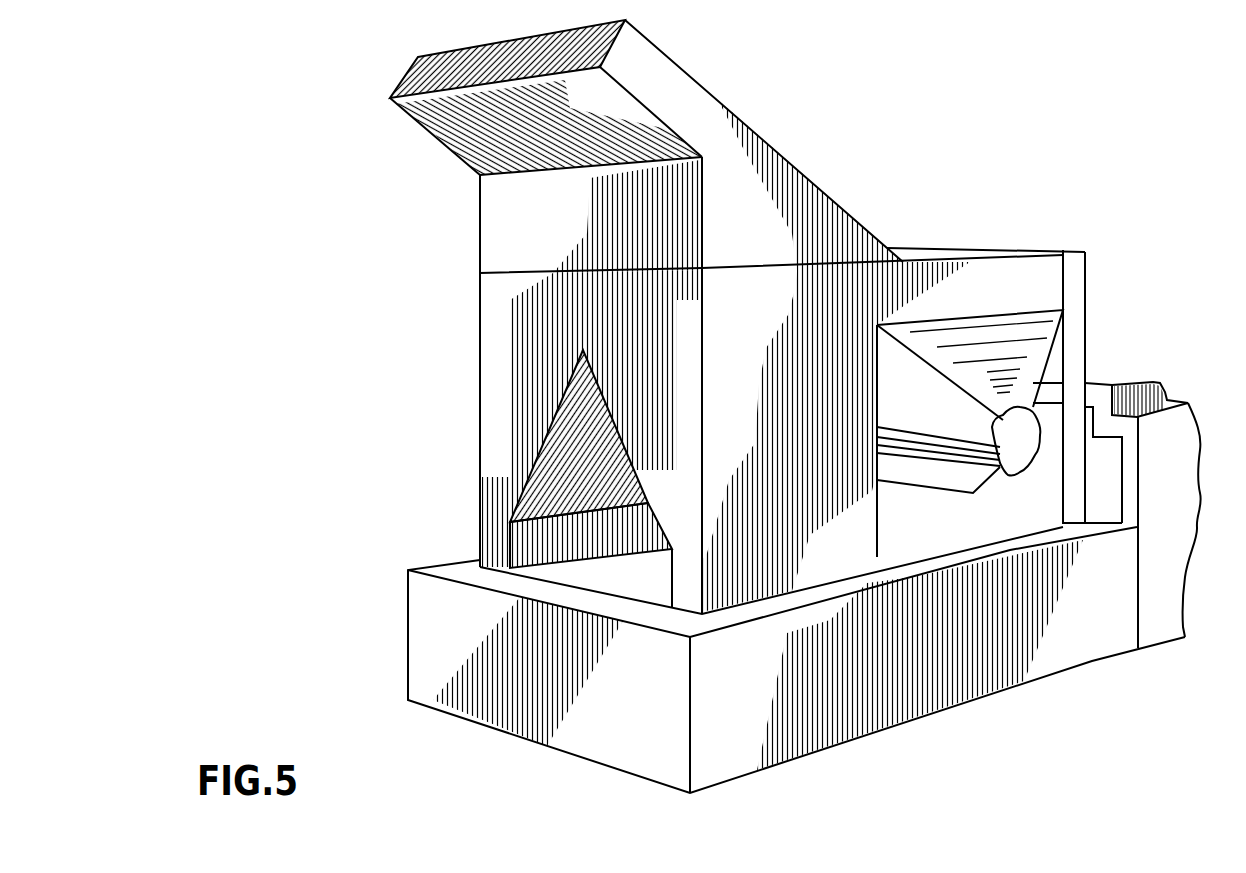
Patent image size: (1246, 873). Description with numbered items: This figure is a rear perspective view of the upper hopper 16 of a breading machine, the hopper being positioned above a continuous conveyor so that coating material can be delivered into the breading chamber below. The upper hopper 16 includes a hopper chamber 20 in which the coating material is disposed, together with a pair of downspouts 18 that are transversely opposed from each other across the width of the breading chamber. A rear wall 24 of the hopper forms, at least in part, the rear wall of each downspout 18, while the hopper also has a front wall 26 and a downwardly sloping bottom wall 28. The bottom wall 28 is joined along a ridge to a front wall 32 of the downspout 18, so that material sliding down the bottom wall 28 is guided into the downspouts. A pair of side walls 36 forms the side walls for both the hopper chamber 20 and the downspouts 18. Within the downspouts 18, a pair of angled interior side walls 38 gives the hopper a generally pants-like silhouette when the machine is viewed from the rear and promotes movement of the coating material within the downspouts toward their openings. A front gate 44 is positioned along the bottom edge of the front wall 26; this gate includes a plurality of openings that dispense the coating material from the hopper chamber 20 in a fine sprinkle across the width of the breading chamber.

The upper hopper 16 is at (1083, 108).
The downspout 18 is at (497, 542).
The hopper chamber 20 is at (1002, 330).
The rear wall 24 is at (522, 352).
The front wall 26 is at (1087, 282).
The downwardly sloping bottom wall 28 is at (953, 390).
The front wall of the downspout 32 is at (880, 467).
The side walls 36 is at (803, 577).
The angled interior side walls 38 is at (560, 497).
The front gate 44 is at (993, 482).